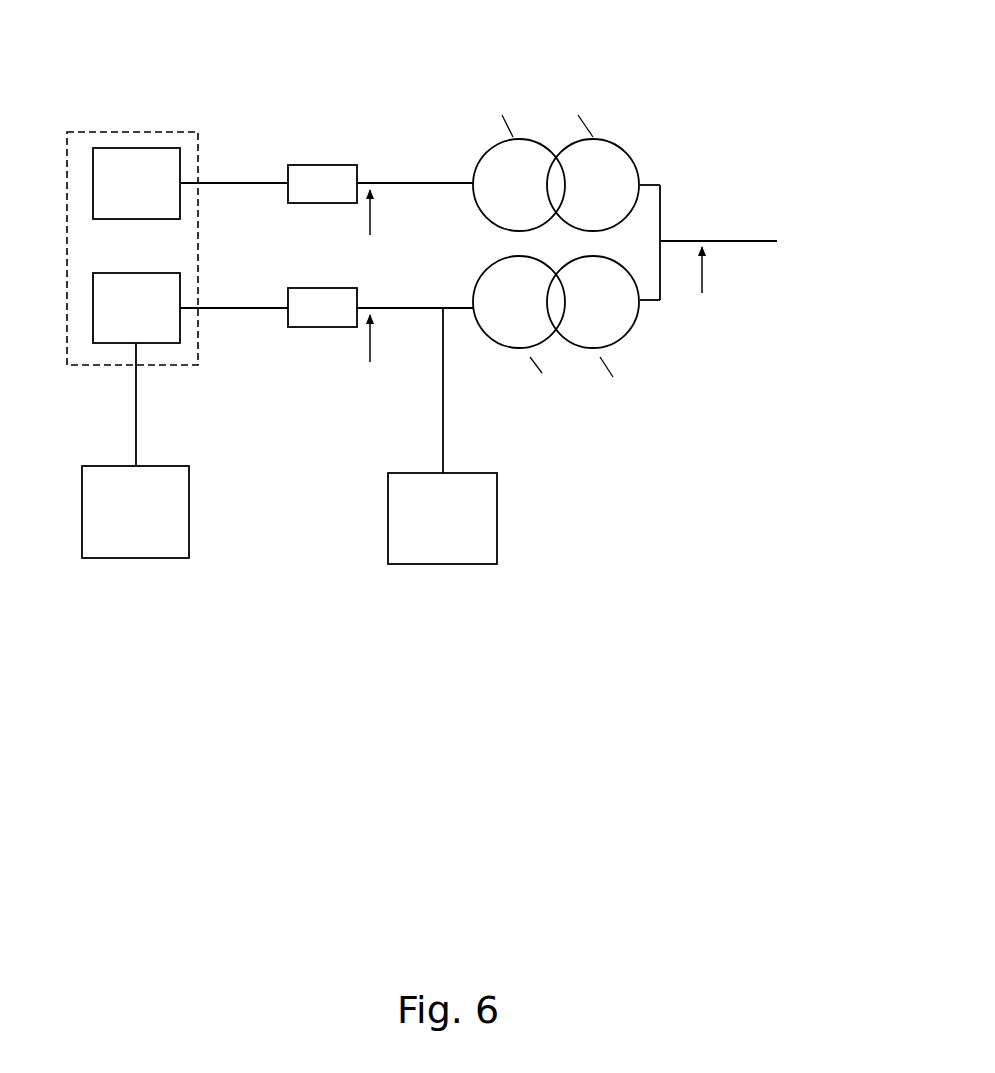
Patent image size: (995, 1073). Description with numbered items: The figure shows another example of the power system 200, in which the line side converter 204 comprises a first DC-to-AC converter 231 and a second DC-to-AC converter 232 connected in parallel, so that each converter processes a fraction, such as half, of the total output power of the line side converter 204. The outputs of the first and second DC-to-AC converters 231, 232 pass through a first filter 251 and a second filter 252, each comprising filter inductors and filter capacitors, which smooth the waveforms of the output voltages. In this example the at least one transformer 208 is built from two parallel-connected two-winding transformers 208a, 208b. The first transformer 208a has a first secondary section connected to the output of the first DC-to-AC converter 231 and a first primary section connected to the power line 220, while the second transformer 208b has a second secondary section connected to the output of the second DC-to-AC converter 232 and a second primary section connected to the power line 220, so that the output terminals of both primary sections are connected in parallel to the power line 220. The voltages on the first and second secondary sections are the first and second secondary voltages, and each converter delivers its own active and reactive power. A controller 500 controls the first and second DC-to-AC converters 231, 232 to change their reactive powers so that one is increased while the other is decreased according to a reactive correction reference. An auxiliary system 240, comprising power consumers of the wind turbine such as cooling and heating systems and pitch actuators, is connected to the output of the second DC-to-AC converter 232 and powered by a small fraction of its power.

The power system 200 is at (290, 52).
The line side converter 204 is at (143, 130).
The first DC-to-AC converter 231 is at (136, 183).
The second DC-to-AC converter 232 is at (136, 308).
The first filter 251 is at (322, 184).
The second filter 252 is at (322, 307).
The at least one transformer 208 is at (592, 33).
The first transformer 208a is at (463, 148).
The second transformer 208b is at (493, 355).
The power line 220 is at (726, 232).
The controller 500 is at (190, 523).
The auxiliary system 240 is at (498, 520).